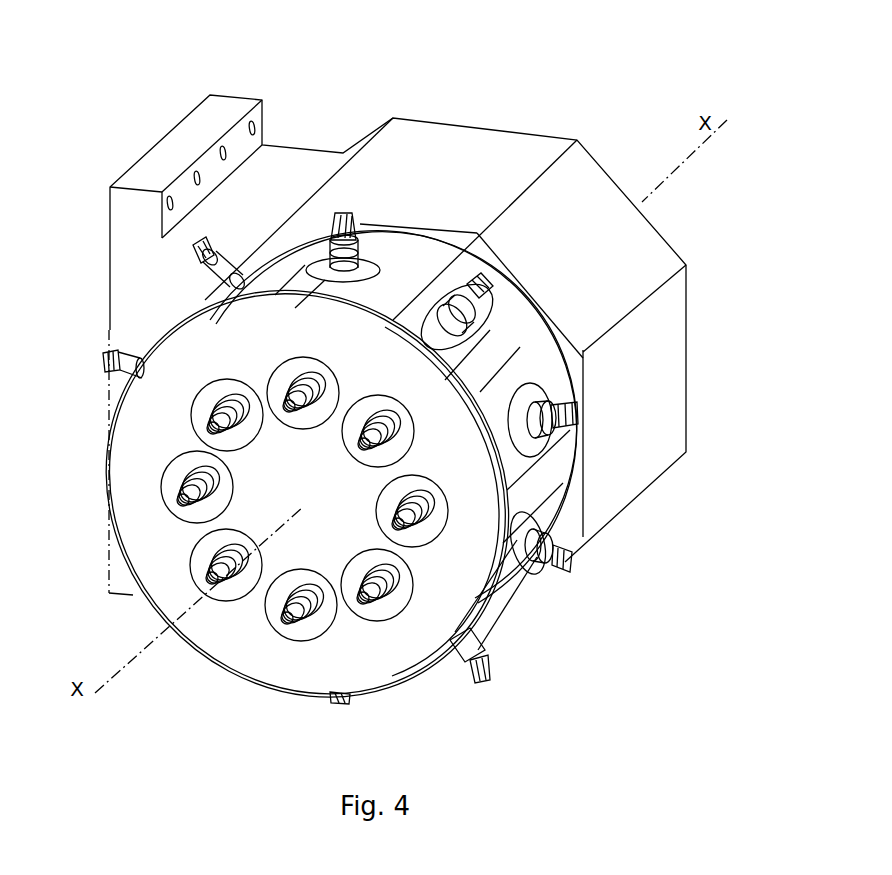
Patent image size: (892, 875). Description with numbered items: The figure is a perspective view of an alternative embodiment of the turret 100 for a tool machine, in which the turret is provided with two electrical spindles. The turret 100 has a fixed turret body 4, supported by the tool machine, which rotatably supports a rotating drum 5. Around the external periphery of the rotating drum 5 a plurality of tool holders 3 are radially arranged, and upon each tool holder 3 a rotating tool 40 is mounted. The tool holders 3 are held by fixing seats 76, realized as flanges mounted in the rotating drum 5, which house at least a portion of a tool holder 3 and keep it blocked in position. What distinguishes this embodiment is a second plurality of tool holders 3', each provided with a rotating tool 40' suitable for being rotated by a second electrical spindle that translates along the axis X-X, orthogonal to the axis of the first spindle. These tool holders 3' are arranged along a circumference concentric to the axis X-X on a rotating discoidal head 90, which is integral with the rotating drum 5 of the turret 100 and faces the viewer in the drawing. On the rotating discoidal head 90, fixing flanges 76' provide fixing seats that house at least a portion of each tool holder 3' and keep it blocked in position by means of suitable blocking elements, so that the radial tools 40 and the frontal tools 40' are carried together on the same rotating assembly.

The turret 100 is at (599, 96).
The turret body 4 is at (686, 340).
The rotating drum 5 is at (523, 355).
The tool holder 3 is at (417, 355).
The rotating tool 40 is at (523, 337).
The second tool holder 3' is at (388, 554).
The second rotating tool 40' is at (241, 483).
The fixing seat 76 is at (481, 481).
The fixing flange 76' is at (307, 494).
The rotating discoidal head 90 is at (425, 490).